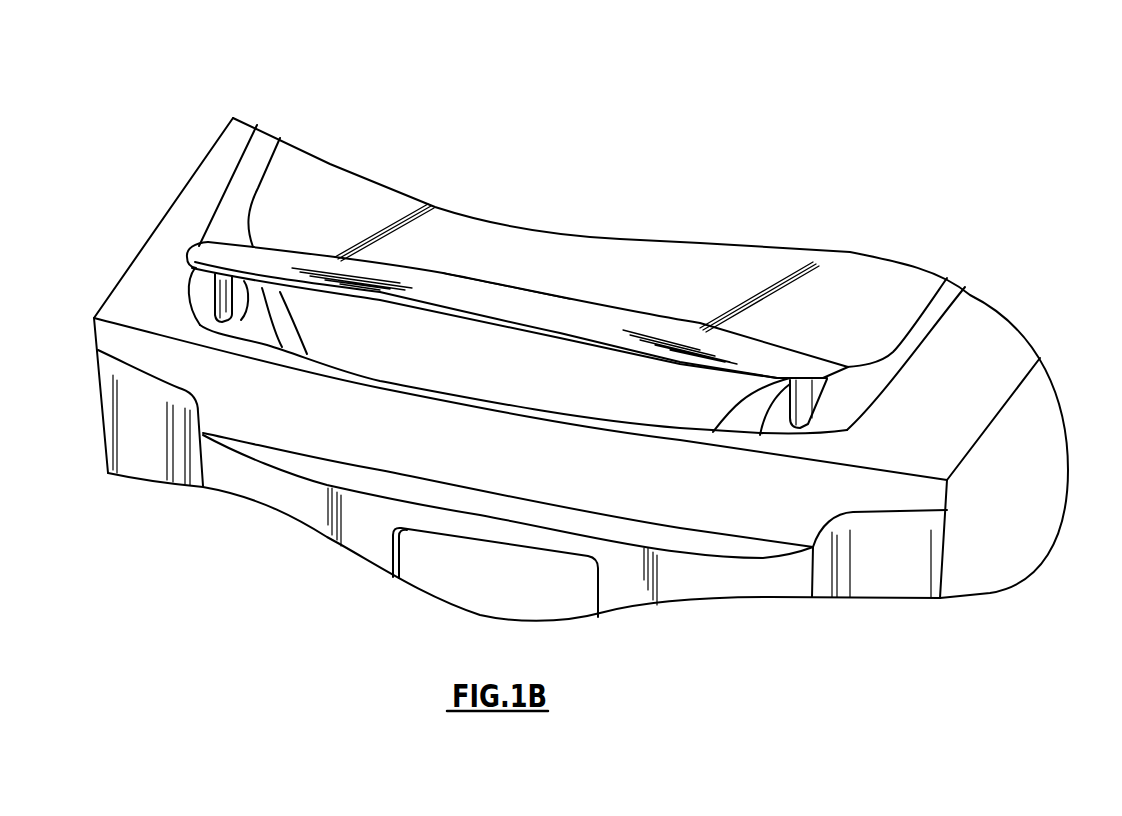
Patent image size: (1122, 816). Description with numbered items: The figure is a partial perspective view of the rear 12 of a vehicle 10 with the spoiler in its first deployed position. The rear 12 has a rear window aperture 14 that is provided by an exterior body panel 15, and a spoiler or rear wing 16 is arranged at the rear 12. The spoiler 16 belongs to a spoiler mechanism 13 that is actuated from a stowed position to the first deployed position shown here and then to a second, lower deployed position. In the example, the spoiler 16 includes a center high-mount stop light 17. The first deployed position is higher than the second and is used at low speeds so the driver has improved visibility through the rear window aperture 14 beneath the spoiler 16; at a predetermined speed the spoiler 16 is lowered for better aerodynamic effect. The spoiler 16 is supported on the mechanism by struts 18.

The vehicle 10 is at (199, 142).
The rear 12 is at (957, 547).
The spoiler mechanism 13 is at (612, 318).
The rear window aperture 14 is at (238, 188).
The exterior body panel 15 is at (960, 442).
The spoiler 16 is at (745, 358).
The center high-mount stop light 17 is at (435, 308).
The struts 18 is at (218, 300).